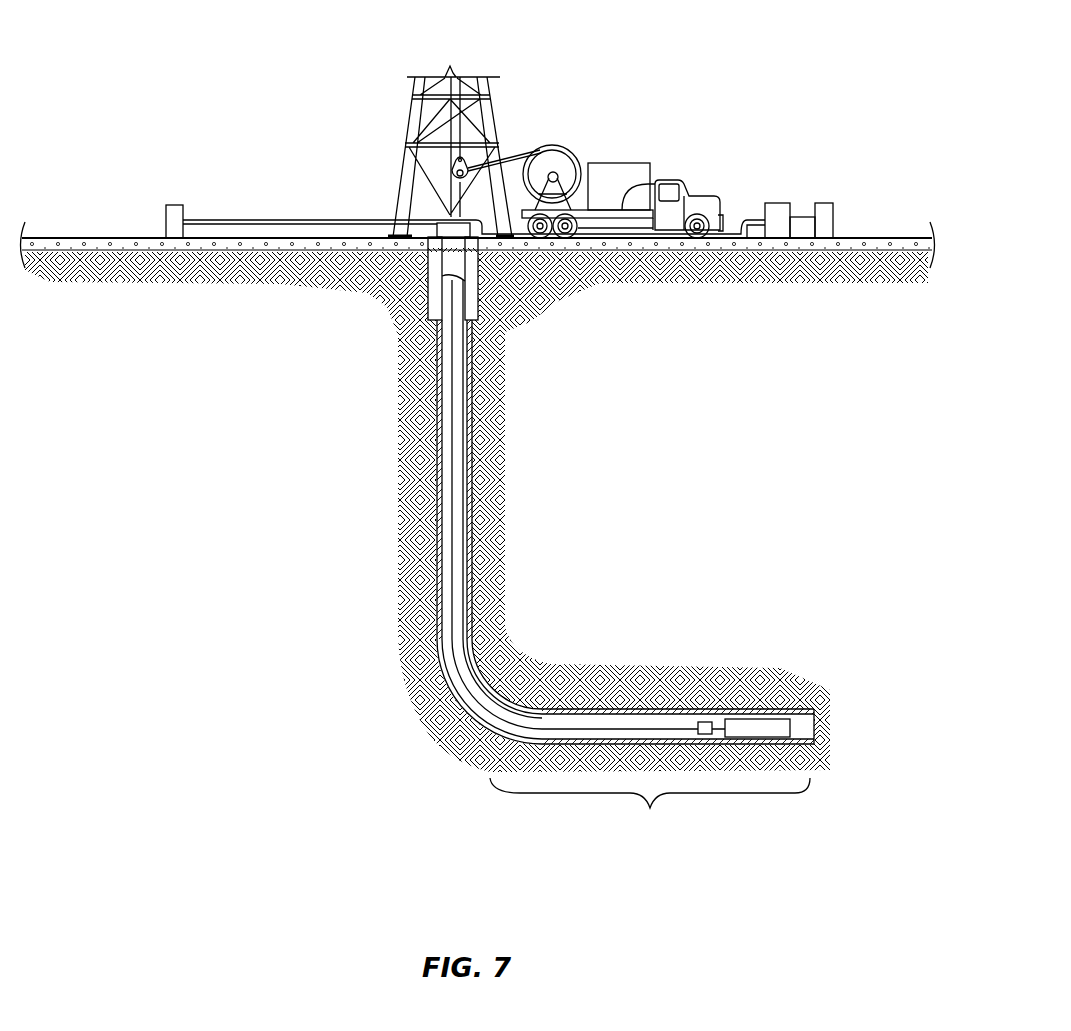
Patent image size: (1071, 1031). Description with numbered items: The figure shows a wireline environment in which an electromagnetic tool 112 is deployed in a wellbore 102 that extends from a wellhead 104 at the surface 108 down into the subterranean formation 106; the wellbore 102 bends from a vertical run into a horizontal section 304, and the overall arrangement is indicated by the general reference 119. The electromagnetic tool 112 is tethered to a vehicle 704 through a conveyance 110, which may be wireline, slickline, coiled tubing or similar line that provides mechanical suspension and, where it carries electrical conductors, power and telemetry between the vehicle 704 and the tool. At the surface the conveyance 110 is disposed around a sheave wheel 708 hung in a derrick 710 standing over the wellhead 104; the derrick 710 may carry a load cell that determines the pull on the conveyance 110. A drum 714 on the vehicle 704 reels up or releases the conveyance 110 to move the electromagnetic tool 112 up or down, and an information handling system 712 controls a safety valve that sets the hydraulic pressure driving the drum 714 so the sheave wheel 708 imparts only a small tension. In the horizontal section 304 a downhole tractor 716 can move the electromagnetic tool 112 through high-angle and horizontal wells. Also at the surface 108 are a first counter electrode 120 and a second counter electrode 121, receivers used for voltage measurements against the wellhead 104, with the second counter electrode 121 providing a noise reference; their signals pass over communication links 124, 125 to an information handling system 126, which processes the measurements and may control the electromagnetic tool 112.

The wellbore 102 is at (485, 355).
The wellhead 104 is at (440, 218).
The subterranean formation 106 is at (268, 738).
The surface 108 is at (136, 237).
The conveyance 110 is at (454, 535).
The electromagnetic tool 112 is at (762, 722).
The well system 119 is at (664, 42).
The first counter electrode 120 is at (829, 203).
The second counter electrode 121 is at (172, 204).
The communication link 124 is at (800, 217).
The communication link 125 is at (296, 220).
The information handling system 126 is at (773, 203).
The horizontal section 304 is at (648, 810).
The vehicle 704 is at (613, 163).
The sheave wheel 708 is at (452, 173).
The derrick 710 is at (412, 112).
The information handling system 712 is at (640, 200).
The drum 714 is at (548, 145).
The downhole tractor 716 is at (708, 722).